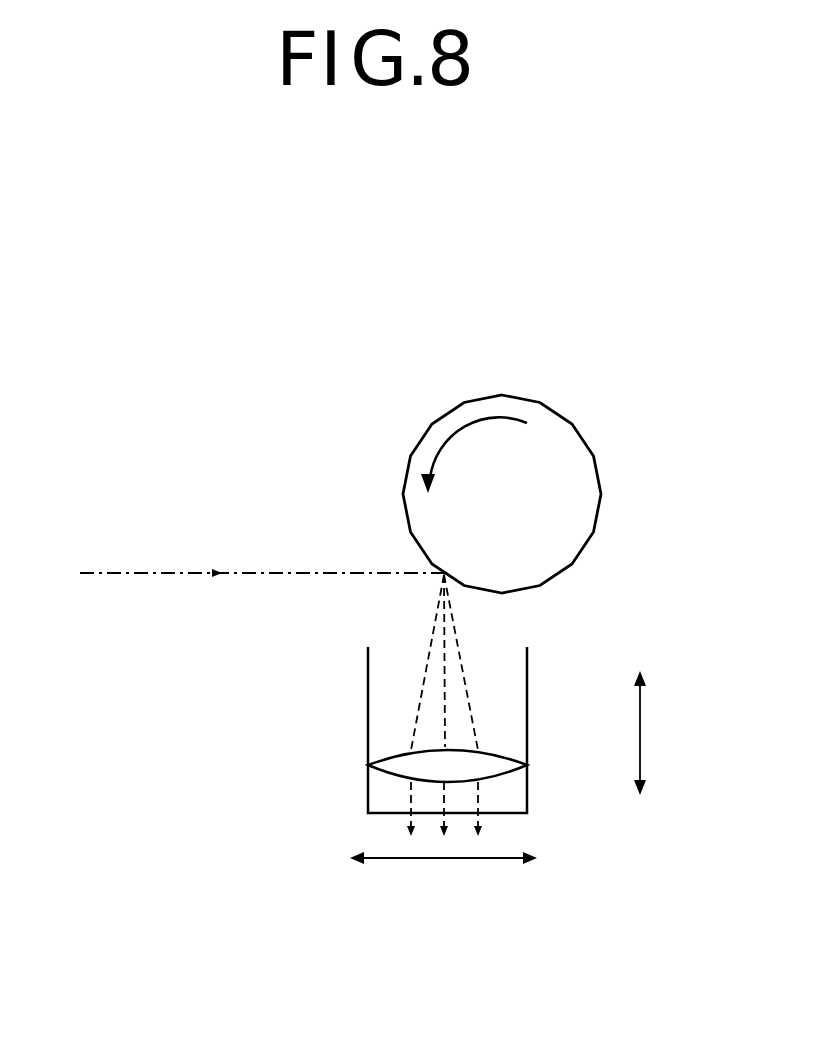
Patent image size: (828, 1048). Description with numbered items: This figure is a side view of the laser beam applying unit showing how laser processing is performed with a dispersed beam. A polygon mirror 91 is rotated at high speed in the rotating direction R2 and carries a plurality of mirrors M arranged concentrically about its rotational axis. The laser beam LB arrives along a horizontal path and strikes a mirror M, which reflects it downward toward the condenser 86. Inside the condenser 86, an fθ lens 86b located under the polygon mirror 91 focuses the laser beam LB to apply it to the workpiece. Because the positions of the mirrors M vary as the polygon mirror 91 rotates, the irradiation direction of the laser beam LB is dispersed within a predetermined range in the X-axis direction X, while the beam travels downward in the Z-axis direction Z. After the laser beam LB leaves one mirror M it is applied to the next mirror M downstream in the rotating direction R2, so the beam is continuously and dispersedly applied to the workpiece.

The polygon mirror 91 is at (577, 463).
The rotating direction R2 is at (447, 440).
The mirror M is at (444, 573).
The laser beam LB is at (148, 573).
The condenser 86 is at (527, 703).
The fθ lens 86b is at (503, 760).
The X-axis direction X is at (443, 874).
The Z-axis direction Z is at (651, 733).